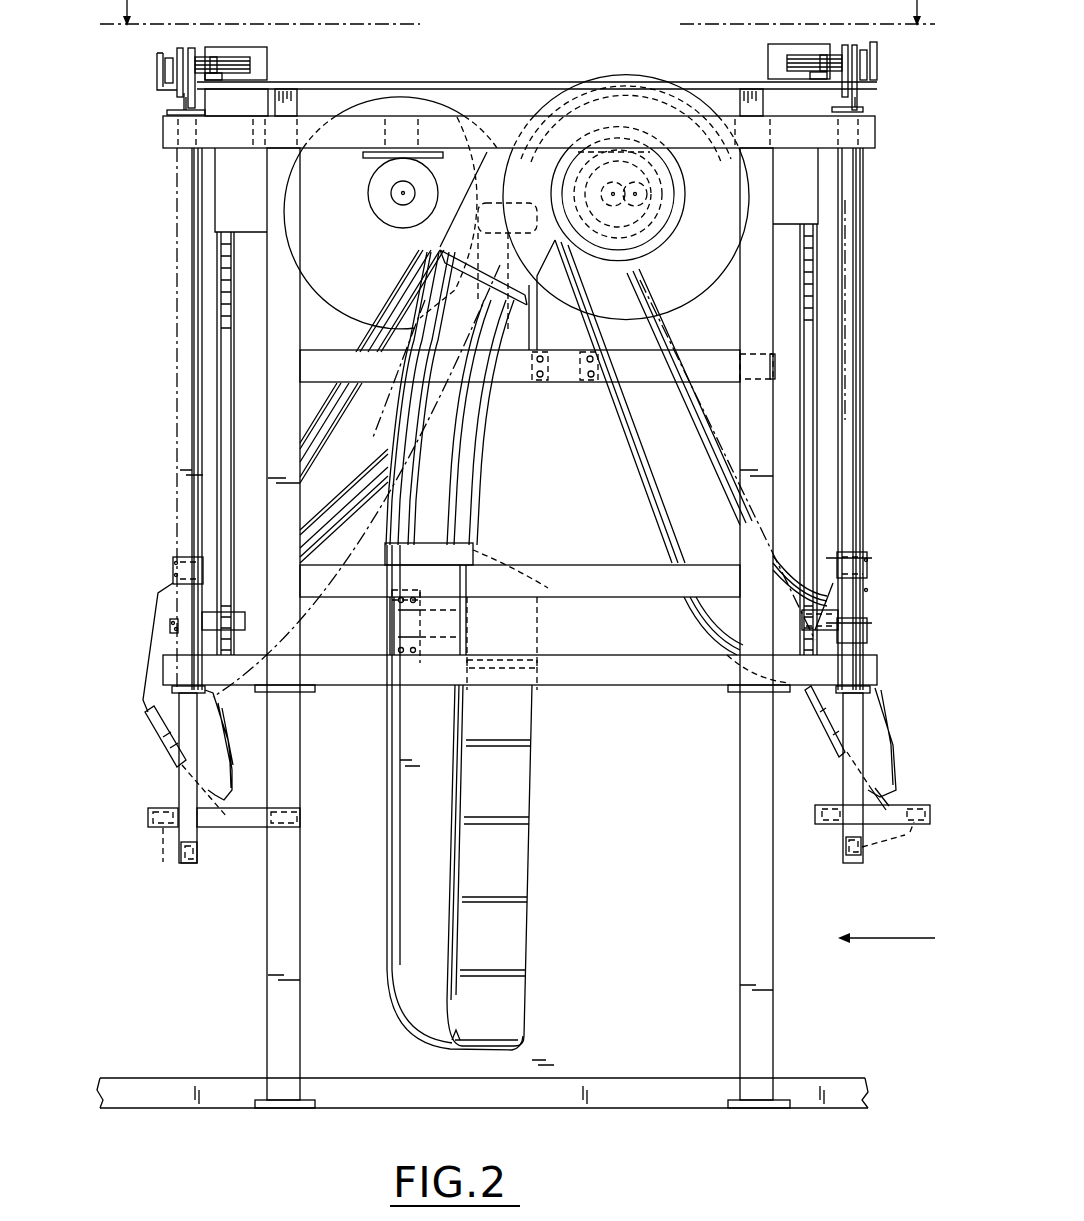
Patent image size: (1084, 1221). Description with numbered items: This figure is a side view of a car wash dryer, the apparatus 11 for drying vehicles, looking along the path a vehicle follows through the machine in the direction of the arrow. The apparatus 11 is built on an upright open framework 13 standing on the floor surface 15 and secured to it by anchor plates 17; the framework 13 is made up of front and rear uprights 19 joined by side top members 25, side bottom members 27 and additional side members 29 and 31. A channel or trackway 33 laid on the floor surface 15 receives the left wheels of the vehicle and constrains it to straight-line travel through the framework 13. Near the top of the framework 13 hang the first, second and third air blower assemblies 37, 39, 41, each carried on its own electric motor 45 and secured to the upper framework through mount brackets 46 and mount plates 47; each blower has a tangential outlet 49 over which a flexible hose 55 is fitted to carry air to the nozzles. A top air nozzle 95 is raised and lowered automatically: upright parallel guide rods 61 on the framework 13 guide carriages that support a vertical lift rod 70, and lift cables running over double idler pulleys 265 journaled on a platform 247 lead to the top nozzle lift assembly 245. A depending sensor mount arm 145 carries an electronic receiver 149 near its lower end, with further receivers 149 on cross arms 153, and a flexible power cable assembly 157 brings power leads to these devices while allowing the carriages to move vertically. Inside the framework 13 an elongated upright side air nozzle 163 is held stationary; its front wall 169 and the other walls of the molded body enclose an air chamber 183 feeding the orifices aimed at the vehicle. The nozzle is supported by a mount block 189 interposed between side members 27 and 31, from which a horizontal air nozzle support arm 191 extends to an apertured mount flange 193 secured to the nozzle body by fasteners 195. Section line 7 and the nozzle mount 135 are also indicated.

The section line 7- 7 is at (521, 13).
The apparatus for drying vehicles 11 is at (168, 369).
The upright open framework 13 is at (260, 937).
The floor surface 15 is at (825, 1078).
The anchor plates 17 is at (268, 1078).
The front and rear uprights 19 is at (282, 1010).
The side top members 25 is at (175, 150).
The side bottom members 27 is at (690, 682).
The additional side member 29 is at (567, 385).
The additional side member 31 is at (570, 562).
The channel or trackway 33 is at (178, 1078).
The first air blower assembly 37 is at (600, 80).
The second air blower assembly 39 is at (700, 300).
The third air blower assembly 41 is at (353, 303).
The electric motors 45 is at (382, 222).
The mount brackets 46 is at (618, 352).
The mount plates 47 is at (380, 157).
The tangential outlet 49 is at (458, 243).
The flexible hoses 55 is at (318, 420).
The guide rods 61 is at (182, 452).
The vertical lift rod 70 is at (178, 558).
The top air nozzle 95 is at (143, 726).
The mounting plate 135 is at (177, 57).
The sensor mount arm 145 is at (848, 838).
The electronic receiver 149 is at (300, 817).
The cross arms 153 is at (150, 827).
The flexible power cable assembly 157 is at (215, 328).
The side air nozzle 163 is at (552, 890).
The front wall 169 is at (400, 1006).
The air chamber 183 is at (392, 757).
The mount block 189 is at (470, 645).
The air nozzle support arm 191 is at (405, 627).
The mount flange 193 is at (395, 597).
The fasteners 195 is at (400, 655).
The top nozzle lift assembly 245 is at (157, 74).
The platform 247 is at (484, 102).
The double idler pulleys 265 is at (250, 62).